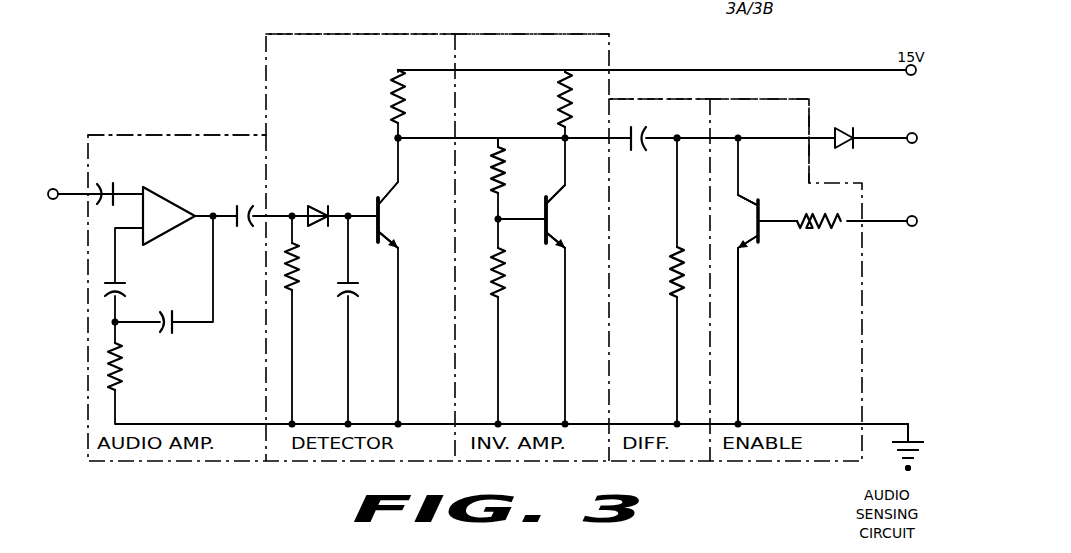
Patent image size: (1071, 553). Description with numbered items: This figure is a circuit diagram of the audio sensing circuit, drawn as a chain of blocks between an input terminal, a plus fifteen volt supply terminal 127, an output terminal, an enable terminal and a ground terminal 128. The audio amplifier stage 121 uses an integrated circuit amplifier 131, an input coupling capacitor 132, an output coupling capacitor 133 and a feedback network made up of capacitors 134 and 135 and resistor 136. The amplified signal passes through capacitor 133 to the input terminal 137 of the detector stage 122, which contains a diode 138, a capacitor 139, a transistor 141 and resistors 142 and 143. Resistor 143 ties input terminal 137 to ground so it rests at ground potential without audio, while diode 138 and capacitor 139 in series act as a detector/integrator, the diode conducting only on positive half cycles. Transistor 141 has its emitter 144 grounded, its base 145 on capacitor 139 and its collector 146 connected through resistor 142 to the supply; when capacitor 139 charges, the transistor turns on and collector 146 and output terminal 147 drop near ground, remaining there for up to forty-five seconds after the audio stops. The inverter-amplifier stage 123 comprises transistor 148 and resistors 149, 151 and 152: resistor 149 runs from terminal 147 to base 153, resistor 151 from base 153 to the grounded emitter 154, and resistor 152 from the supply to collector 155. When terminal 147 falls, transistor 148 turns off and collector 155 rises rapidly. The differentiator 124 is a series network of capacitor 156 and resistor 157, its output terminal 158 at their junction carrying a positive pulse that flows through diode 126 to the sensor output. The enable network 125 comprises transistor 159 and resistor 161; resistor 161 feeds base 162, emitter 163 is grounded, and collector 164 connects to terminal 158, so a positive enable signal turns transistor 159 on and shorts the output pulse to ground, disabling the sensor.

The audio amplifier stage 121 is at (171, 135).
The detector stage 122 is at (382, 34).
The inverter-amplifier stage 123 is at (544, 34).
The differentiator 124 is at (636, 99).
The enable network 125 is at (809, 99).
The diode 126 is at (854, 133).
The +15 volt supply terminal 127 is at (911, 75).
The ground terminal 128 is at (912, 440).
The integrated circuit amplifier 131 is at (165, 190).
The input coupling capacitor 132 is at (114, 184).
The output coupling capacitor 133 is at (237, 206).
The capacitor 134 is at (174, 312).
The capacitor 135 is at (118, 282).
The resistor 136 is at (122, 363).
The input terminal 137 is at (269, 214).
The diode 138 is at (313, 208).
The capacitor 139 is at (351, 297).
The transistor 141 is at (382, 216).
The resistor 142 is at (394, 112).
The resistor 143 is at (297, 270).
The emitter 144 is at (392, 240).
The base 145 is at (376, 204).
The collector 146 is at (399, 150).
The output terminal 147 is at (497, 138).
The transistor 148 is at (549, 216).
The resistor 149 is at (495, 176).
The resistor 151 is at (503, 268).
The resistor 152 is at (544, 99).
The base 153 is at (520, 216).
The emitter 154 is at (556, 239).
The collector 155 is at (545, 204).
The capacitor 156 is at (631, 128).
The resistor 157 is at (672, 263).
The differentiator output terminal 158 is at (677, 138).
The transistor 159 is at (755, 224).
The resistor 161 is at (818, 224).
The base 162 is at (782, 222).
The emitter 163 is at (739, 300).
The collector 164 is at (746, 197).